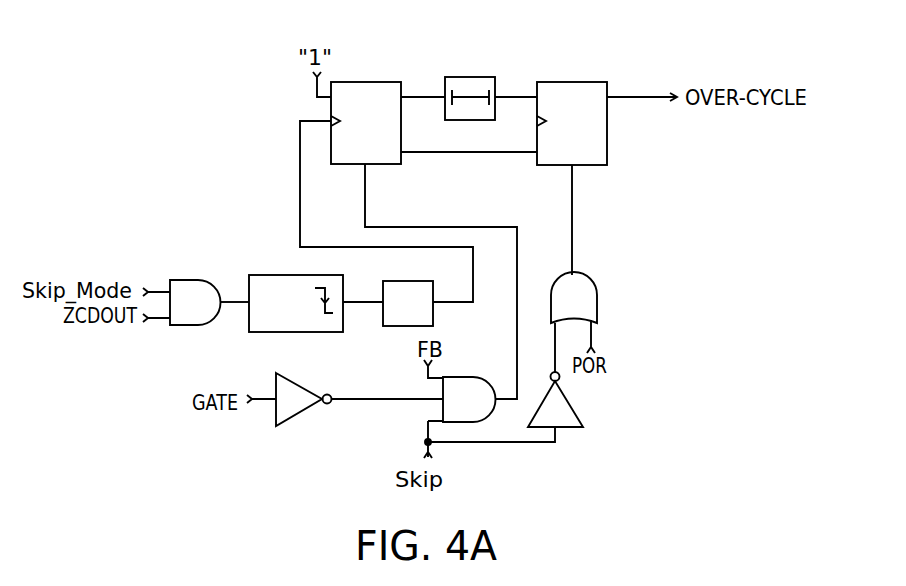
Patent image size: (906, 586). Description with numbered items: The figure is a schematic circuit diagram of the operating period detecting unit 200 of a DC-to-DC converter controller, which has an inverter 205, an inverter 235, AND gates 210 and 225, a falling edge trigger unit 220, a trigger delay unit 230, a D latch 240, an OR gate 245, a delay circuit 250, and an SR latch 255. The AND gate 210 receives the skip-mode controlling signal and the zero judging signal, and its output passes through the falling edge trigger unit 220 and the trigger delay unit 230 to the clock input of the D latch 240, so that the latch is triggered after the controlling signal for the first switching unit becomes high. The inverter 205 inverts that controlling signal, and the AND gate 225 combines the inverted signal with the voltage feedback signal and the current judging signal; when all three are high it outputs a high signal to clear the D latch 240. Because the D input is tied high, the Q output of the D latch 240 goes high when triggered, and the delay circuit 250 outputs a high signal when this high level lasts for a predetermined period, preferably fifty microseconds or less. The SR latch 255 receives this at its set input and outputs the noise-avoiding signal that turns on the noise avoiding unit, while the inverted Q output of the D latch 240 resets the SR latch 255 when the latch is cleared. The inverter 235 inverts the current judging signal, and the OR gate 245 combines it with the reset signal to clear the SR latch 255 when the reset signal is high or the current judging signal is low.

The operating period detecting unit 200 is at (793, 39).
The inverter 205 is at (283, 418).
The AND gate 210 is at (185, 284).
The falling edge trigger unit 220 is at (304, 314).
The AND gate 225 is at (456, 379).
The trigger delay unit 230 is at (426, 314).
The inverter 235 is at (573, 415).
The D latch 240 is at (360, 84).
The OR gate 245 is at (591, 293).
The delay circuit 250 is at (465, 79).
The SR latch 255 is at (575, 84).